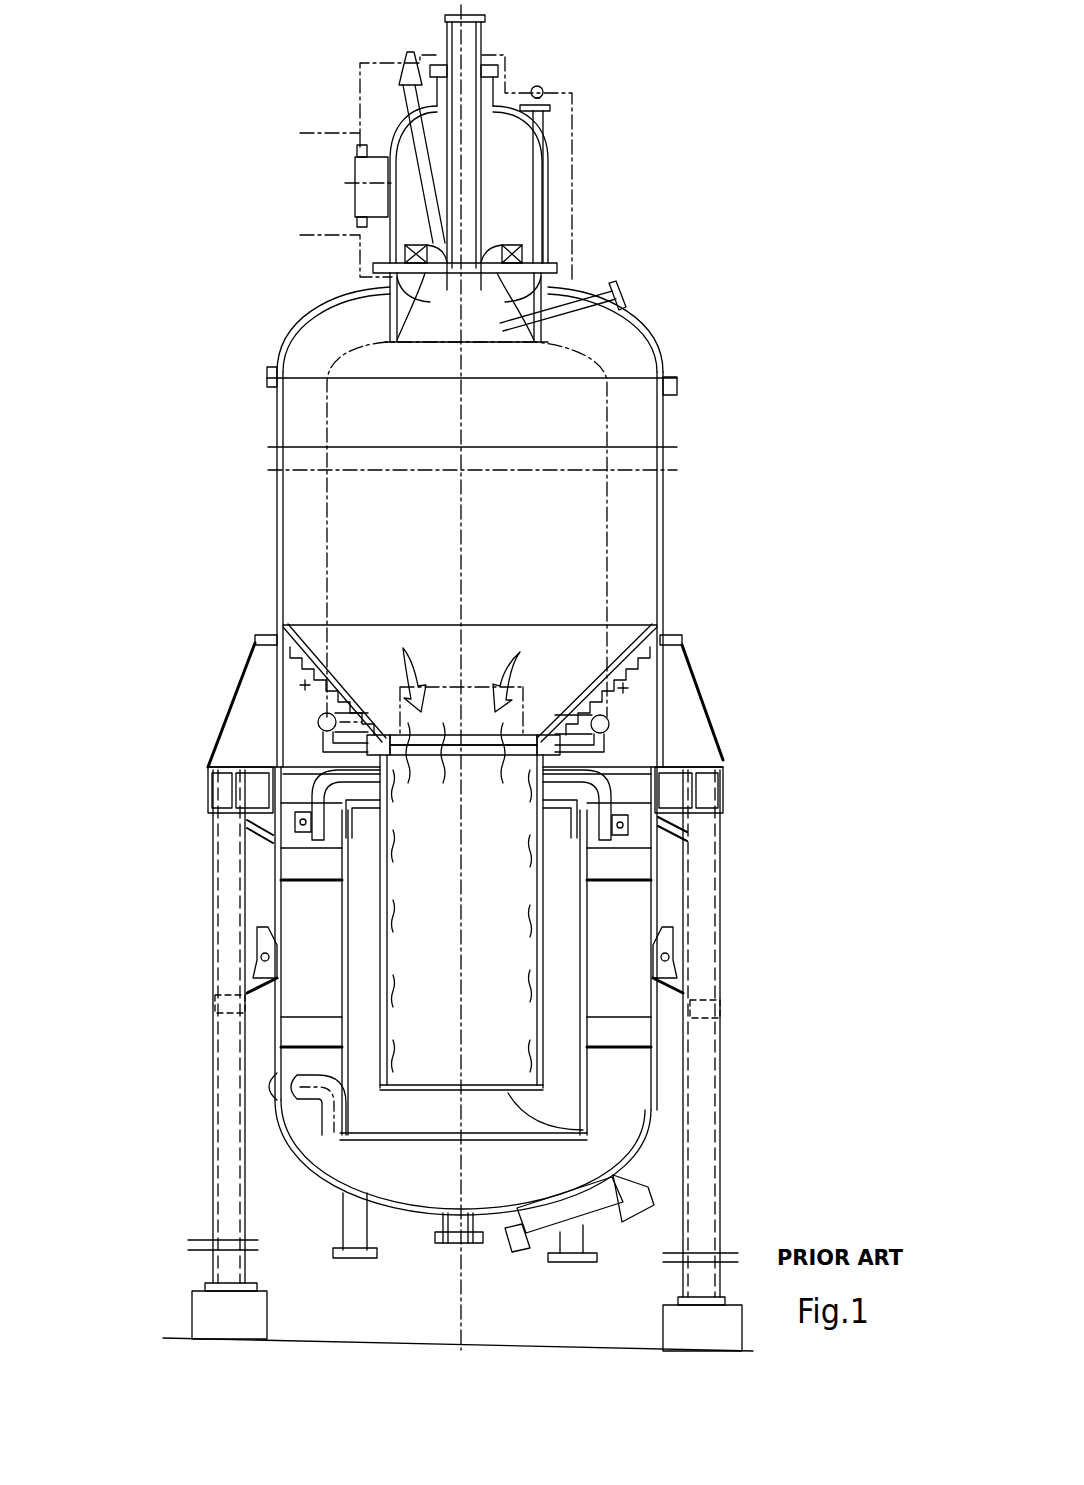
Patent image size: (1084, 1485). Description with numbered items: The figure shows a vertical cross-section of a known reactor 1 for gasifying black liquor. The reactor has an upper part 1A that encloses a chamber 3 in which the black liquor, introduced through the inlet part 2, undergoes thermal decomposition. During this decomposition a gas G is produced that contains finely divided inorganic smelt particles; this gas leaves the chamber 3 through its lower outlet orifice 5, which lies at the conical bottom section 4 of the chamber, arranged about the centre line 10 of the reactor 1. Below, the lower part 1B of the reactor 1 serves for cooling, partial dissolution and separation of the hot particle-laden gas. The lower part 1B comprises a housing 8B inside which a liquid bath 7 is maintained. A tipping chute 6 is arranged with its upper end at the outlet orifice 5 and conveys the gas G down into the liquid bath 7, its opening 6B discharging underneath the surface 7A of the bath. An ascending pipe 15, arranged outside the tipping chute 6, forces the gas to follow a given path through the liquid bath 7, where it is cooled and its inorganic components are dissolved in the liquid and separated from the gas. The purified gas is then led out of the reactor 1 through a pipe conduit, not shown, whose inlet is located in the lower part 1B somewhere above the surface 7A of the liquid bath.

The reactor 1 is at (391, 774).
The upper part 1A is at (277, 523).
The lower part 1B is at (277, 983).
The inlet part 2 is at (268, 184).
The chamber 3 is at (347, 415).
The bottom section 4 is at (600, 650).
The lower outlet orifice 5 is at (572, 745).
The tipping chute 6 is at (593, 957).
The opening 6B is at (510, 1093).
The liquid bath 7 is at (572, 971).
The surface 7A is at (299, 876).
The housing 8B is at (300, 1180).
The centre line 10 is at (475, 540).
The ascending pipe 15 is at (590, 1065).
The gas G is at (392, 668).